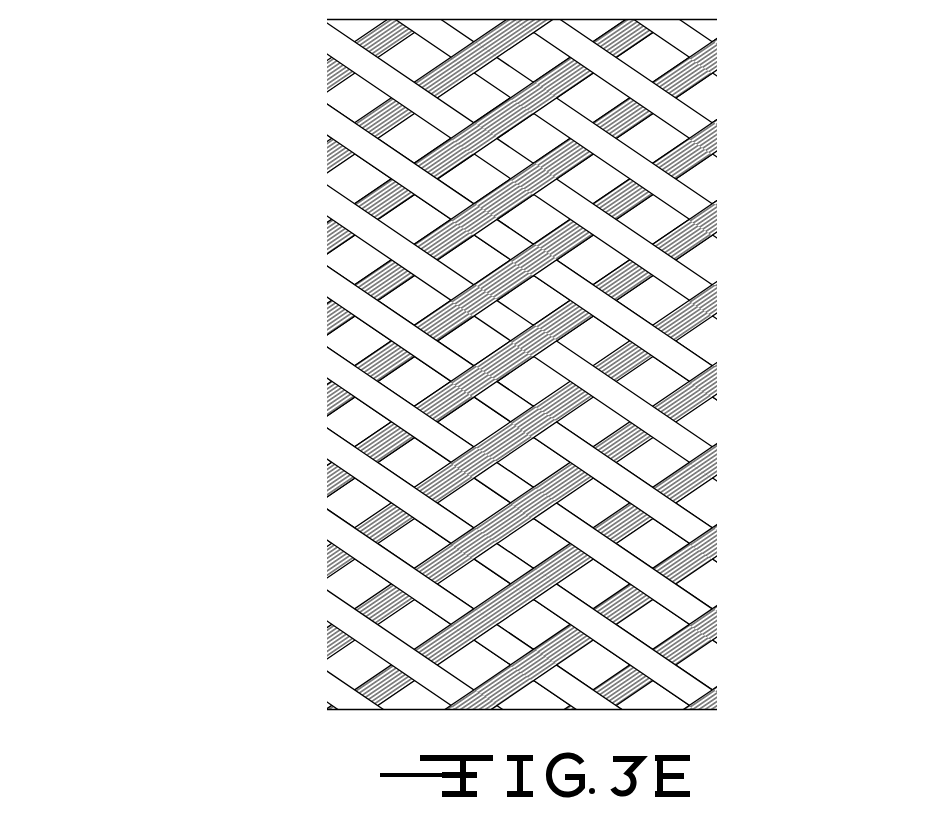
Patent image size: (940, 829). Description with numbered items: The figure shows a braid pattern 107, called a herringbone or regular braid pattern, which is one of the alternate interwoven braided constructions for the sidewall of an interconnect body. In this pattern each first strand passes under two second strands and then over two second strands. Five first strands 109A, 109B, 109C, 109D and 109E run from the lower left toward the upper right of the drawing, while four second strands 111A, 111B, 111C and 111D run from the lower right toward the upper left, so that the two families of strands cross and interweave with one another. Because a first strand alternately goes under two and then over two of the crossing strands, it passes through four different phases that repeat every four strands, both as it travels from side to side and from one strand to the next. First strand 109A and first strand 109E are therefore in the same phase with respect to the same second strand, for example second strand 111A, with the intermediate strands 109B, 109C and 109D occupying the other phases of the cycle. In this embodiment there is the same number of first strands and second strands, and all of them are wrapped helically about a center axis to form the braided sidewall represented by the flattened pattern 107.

The braid pattern 107 is at (840, 187).
The first strand 109A is at (327, 153).
The first strand 109B is at (348, 282).
The first strand 109C is at (330, 392).
The first strand 109D is at (327, 477).
The first strand 109E is at (327, 573).
The second strand 111A is at (362, 226).
The second strand 111B is at (368, 328).
The second strand 111C is at (375, 402).
The second strand 111D is at (377, 477).